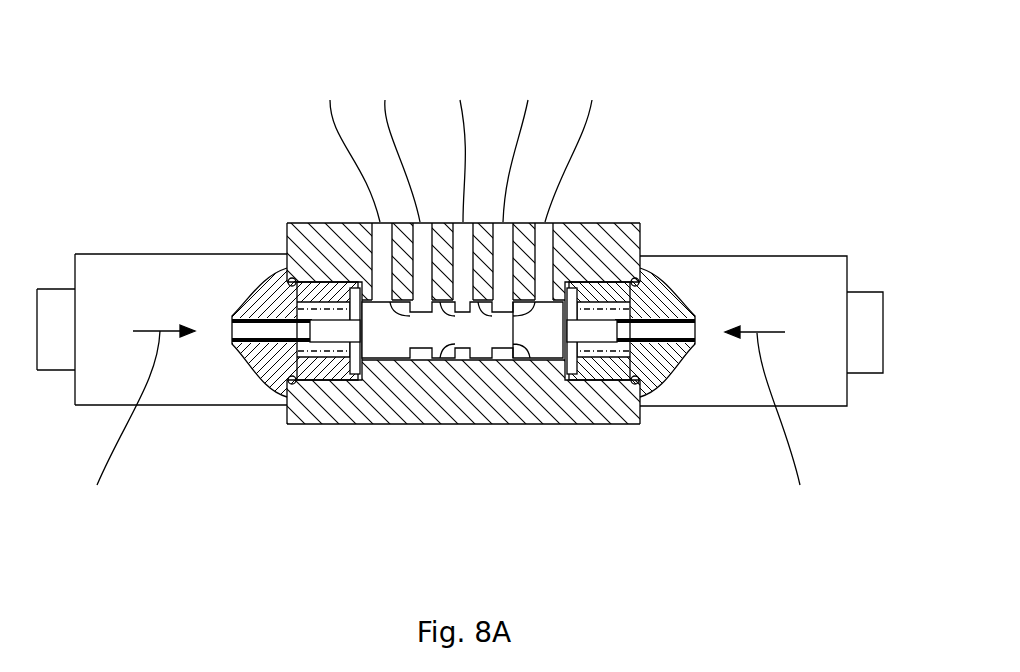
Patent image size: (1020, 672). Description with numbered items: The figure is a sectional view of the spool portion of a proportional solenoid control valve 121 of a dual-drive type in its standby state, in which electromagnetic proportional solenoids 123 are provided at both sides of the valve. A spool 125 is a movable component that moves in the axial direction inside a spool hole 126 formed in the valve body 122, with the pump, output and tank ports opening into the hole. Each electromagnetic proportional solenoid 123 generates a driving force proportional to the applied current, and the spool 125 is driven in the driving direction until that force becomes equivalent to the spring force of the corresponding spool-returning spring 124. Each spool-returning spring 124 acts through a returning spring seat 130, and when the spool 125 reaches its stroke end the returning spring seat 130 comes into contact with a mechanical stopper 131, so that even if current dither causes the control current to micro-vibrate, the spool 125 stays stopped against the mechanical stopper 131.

The proportional solenoid control valve 121 is at (724, 96).
The valve body 122 is at (601, 213).
The electromagnetic proportional solenoid 123 is at (126, 249).
The spool-returning spring 124 is at (317, 388).
The spool 125 is at (444, 358).
The spool hole 126 is at (502, 358).
The returning spring seat 130 is at (345, 362).
The mechanical stopper 131 is at (357, 362).